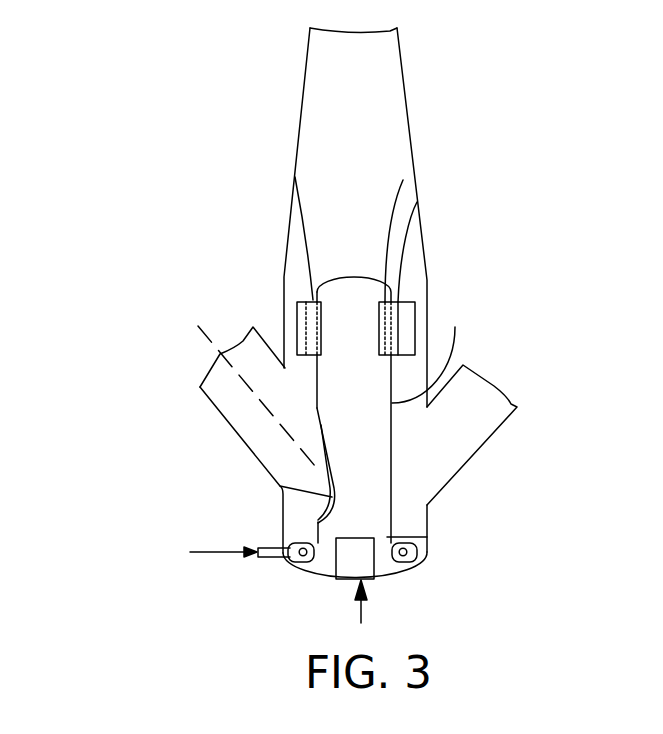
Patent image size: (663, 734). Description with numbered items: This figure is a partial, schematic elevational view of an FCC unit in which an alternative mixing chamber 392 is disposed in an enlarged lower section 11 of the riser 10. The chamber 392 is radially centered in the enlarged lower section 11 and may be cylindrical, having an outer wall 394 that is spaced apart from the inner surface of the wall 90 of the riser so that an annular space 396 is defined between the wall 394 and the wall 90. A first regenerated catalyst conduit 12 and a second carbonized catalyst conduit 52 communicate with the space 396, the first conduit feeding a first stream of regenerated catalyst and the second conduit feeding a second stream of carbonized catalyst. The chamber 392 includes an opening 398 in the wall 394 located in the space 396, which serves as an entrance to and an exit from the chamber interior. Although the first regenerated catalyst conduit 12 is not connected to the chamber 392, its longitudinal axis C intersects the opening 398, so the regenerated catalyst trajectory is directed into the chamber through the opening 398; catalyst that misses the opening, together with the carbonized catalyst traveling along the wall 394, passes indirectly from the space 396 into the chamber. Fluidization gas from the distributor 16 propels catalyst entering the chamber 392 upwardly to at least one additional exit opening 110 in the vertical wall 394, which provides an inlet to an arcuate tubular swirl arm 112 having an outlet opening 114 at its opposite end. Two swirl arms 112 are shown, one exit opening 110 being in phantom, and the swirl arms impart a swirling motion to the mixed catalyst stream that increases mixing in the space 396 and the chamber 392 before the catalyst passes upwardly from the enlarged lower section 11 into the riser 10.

The riser 10 is at (475, 111).
The enlarged lower section 11 is at (283, 300).
The first regenerated catalyst conduit 12 is at (235, 432).
The distributor 16 is at (342, 572).
The second carbonized catalyst conduit 52 is at (487, 441).
The wall 90 is at (282, 520).
The exit opening 110 is at (317, 332).
The swirl arm 112 is at (295, 177).
The outlet opening 114 is at (304, 305).
The mixing chamber 392 is at (410, 537).
The outer wall 394 is at (436, 349).
The space 396 is at (408, 522).
The opening 398 is at (282, 487).
The longitudinal axis C is at (216, 349).